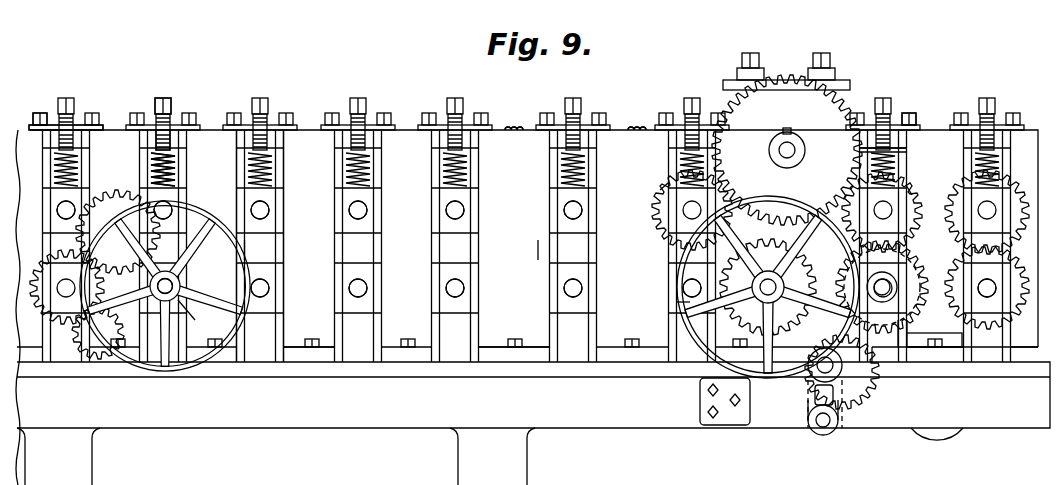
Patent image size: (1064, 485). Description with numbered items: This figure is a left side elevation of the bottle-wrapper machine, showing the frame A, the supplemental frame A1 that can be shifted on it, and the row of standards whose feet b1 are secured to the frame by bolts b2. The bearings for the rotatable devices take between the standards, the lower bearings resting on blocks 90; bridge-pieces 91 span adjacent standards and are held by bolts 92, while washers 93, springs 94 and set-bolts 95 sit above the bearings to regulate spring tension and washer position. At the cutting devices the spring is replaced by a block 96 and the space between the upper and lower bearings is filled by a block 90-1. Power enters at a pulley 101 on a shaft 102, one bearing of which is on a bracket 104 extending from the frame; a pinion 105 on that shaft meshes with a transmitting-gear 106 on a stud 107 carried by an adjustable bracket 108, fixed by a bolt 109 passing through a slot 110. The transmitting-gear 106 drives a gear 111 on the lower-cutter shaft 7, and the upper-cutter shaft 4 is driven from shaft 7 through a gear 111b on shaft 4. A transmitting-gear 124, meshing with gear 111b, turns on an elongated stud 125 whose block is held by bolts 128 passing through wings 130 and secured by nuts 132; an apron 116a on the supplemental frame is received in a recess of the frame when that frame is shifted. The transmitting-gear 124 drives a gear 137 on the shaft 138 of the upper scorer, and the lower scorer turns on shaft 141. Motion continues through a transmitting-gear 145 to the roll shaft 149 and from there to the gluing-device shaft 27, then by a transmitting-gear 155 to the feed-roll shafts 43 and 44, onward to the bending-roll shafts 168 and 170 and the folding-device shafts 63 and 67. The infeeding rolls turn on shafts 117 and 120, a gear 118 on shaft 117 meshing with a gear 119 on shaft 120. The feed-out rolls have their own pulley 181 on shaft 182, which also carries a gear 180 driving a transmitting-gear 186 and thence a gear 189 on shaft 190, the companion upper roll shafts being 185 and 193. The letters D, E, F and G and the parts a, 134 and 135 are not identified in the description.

The frame A is at (982, 420).
The supplemental frame A1 is at (1020, 355).
The feet b1 is at (303, 358).
The bolts b2 is at (310, 340).
The upper-cutter shaft 4 is at (883, 205).
The lower-cutter shaft 7 is at (882, 287).
The hub of gear 7 a is at (888, 290).
The shaft of the gluing device 27 is at (564, 289).
The shaft of the upper feed-roll 43 is at (447, 210).
The shaft of the lower feed-roll 44 is at (447, 288).
The shaft of the lower folding device 63 is at (278, 282).
The shaft of the upper folding device 67 is at (268, 209).
The blocks 90 is at (260, 357).
The block 90-1 is at (280, 251).
The bridge-pieces 91 is at (130, 127).
The bolts 92 is at (137, 113).
The washers 93 is at (188, 148).
The springs 94 is at (180, 167).
The set-bolts 95 is at (170, 107).
The block 96 is at (913, 147).
The pulley 101 is at (683, 284).
The shaft 102 is at (760, 289).
The bracket 104 is at (765, 410).
The pinion 105 is at (722, 272).
The transmitting-gear 106 is at (863, 380).
The stud 107 is at (833, 358).
The adjustable bracket 108 is at (815, 430).
The bolt 109 is at (832, 402).
The slot 110 is at (832, 430).
The gear 111 is at (918, 312).
The gear 111b is at (892, 160).
The apron 116a is at (937, 441).
The shaft of the lower infeeding-roll 117 is at (985, 292).
The gear 118 is at (960, 285).
The gear 119 is at (912, 195).
The shaft of the upper infeeding-roll 120 is at (987, 219).
The transmitting-gear 124 is at (752, 92).
The elongated stud 125 is at (796, 150).
The bolts 128 is at (813, 53).
The wings 130 is at (723, 85).
The nuts 132 is at (812, 72).
The hub 134 is at (771, 159).
The key 135 is at (791, 127).
The gear 137 is at (668, 183).
The shaft of the upper scorer 138 is at (692, 203).
The shaft of the lower scorer 141 is at (678, 302).
The transmitting-gear 145 is at (638, 124).
The shaft 149 is at (565, 213).
The transmitting-gear 155 is at (513, 124).
The shaft of the lower bending-roll 168 is at (350, 289).
The shaft of the upper bending-roll 170 is at (350, 211).
The gear 180 is at (188, 312).
The pulley 181 is at (167, 387).
The shaft of the lower feeding-out roll 182 is at (180, 285).
The shaft of the upper feeding-out roll 185 is at (172, 210).
The transmitting-gear 186 is at (112, 192).
The gear 189 is at (72, 320).
The shaft of the lower feed-out roll 190 is at (65, 292).
The shaft of the feed-out roll 193 is at (58, 211).
The bearing unit D is at (905, 107).
The bearing unit E is at (676, 104).
The bearing unit F is at (378, 107).
The bearing unit G is at (282, 107).